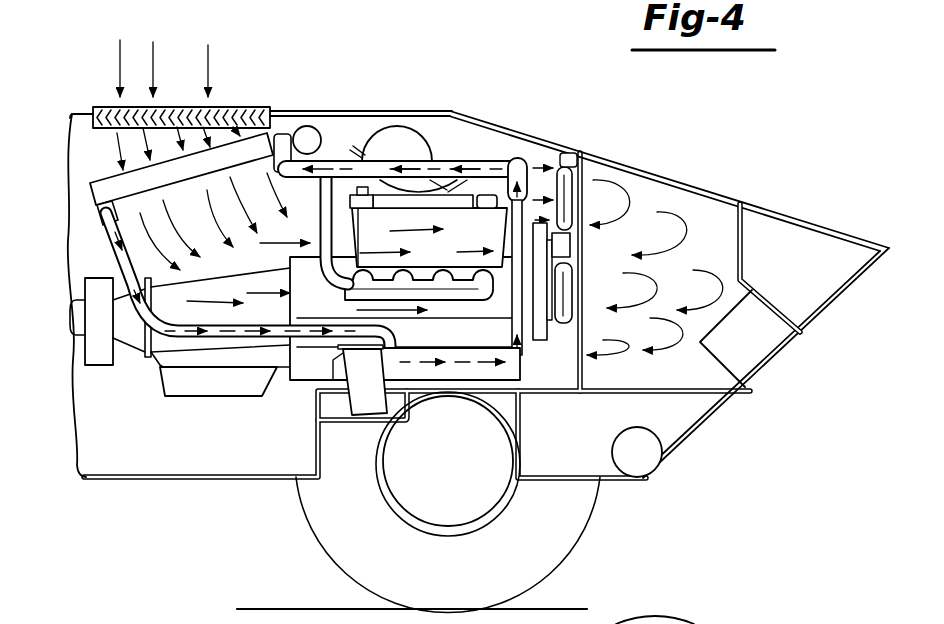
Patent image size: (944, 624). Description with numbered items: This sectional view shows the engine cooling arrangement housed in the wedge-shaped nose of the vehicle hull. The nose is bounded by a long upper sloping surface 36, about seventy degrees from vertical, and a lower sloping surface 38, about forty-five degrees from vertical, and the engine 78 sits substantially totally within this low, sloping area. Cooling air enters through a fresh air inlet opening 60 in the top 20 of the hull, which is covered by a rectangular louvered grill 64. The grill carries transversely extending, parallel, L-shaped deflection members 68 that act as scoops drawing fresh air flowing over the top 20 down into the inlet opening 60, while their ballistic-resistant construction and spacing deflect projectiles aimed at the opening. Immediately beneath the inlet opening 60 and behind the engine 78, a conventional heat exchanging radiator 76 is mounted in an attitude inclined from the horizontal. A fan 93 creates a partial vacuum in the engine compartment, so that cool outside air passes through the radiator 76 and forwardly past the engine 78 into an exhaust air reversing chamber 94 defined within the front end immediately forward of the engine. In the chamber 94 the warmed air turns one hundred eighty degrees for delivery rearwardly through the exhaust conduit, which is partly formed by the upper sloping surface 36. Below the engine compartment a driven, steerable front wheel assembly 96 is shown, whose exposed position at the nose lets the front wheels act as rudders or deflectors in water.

The top 20 is at (317, 110).
The upper sloping surface 36 is at (763, 207).
The lower sloping surface 38 is at (782, 350).
The fresh air inlet opening 60 is at (98, 97).
The louvered grill 64 is at (240, 93).
The deflection members 68 is at (177, 107).
The radiator 76 is at (97, 205).
The engine 78 is at (472, 149).
The fan 93 is at (578, 162).
The exhaust air reversing chamber 94 is at (687, 213).
The front wheel assembly 96 is at (583, 533).